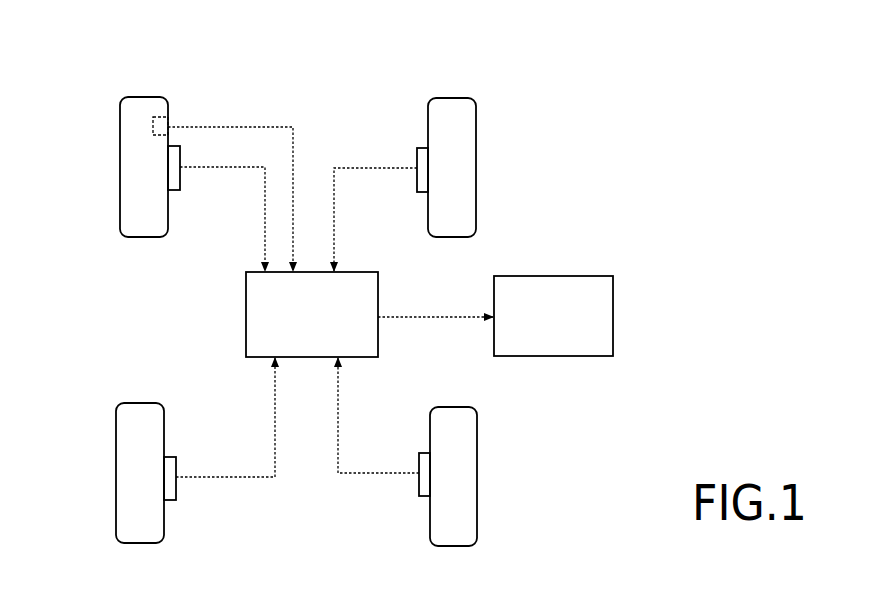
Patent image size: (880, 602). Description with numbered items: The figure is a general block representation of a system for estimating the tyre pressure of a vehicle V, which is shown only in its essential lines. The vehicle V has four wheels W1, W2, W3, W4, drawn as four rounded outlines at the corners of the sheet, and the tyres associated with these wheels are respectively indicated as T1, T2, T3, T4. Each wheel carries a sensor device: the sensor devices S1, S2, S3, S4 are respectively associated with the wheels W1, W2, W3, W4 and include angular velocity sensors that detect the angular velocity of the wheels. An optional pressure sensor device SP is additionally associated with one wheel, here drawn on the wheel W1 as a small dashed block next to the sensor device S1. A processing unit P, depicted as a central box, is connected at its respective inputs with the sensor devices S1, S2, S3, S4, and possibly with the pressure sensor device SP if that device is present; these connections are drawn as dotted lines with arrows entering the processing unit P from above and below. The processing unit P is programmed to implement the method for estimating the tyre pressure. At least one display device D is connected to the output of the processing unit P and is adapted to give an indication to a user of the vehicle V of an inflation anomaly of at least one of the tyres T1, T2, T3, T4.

The tyre T1 is at (140, 106).
The tyre T2 is at (460, 112).
The tyre T3 is at (137, 536).
The tyre T4 is at (462, 537).
The wheel W1 is at (117, 189).
The wheel W2 is at (479, 175).
The wheel W3 is at (114, 471).
The wheel W4 is at (479, 486).
The sensor device S1 is at (180, 176).
The sensor device S2 is at (417, 160).
The sensor device S3 is at (172, 470).
The sensor device S4 is at (417, 480).
The pressure sensor device SP is at (170, 125).
The processing unit P is at (255, 312).
The display device D is at (568, 300).
The vehicle V is at (634, 171).